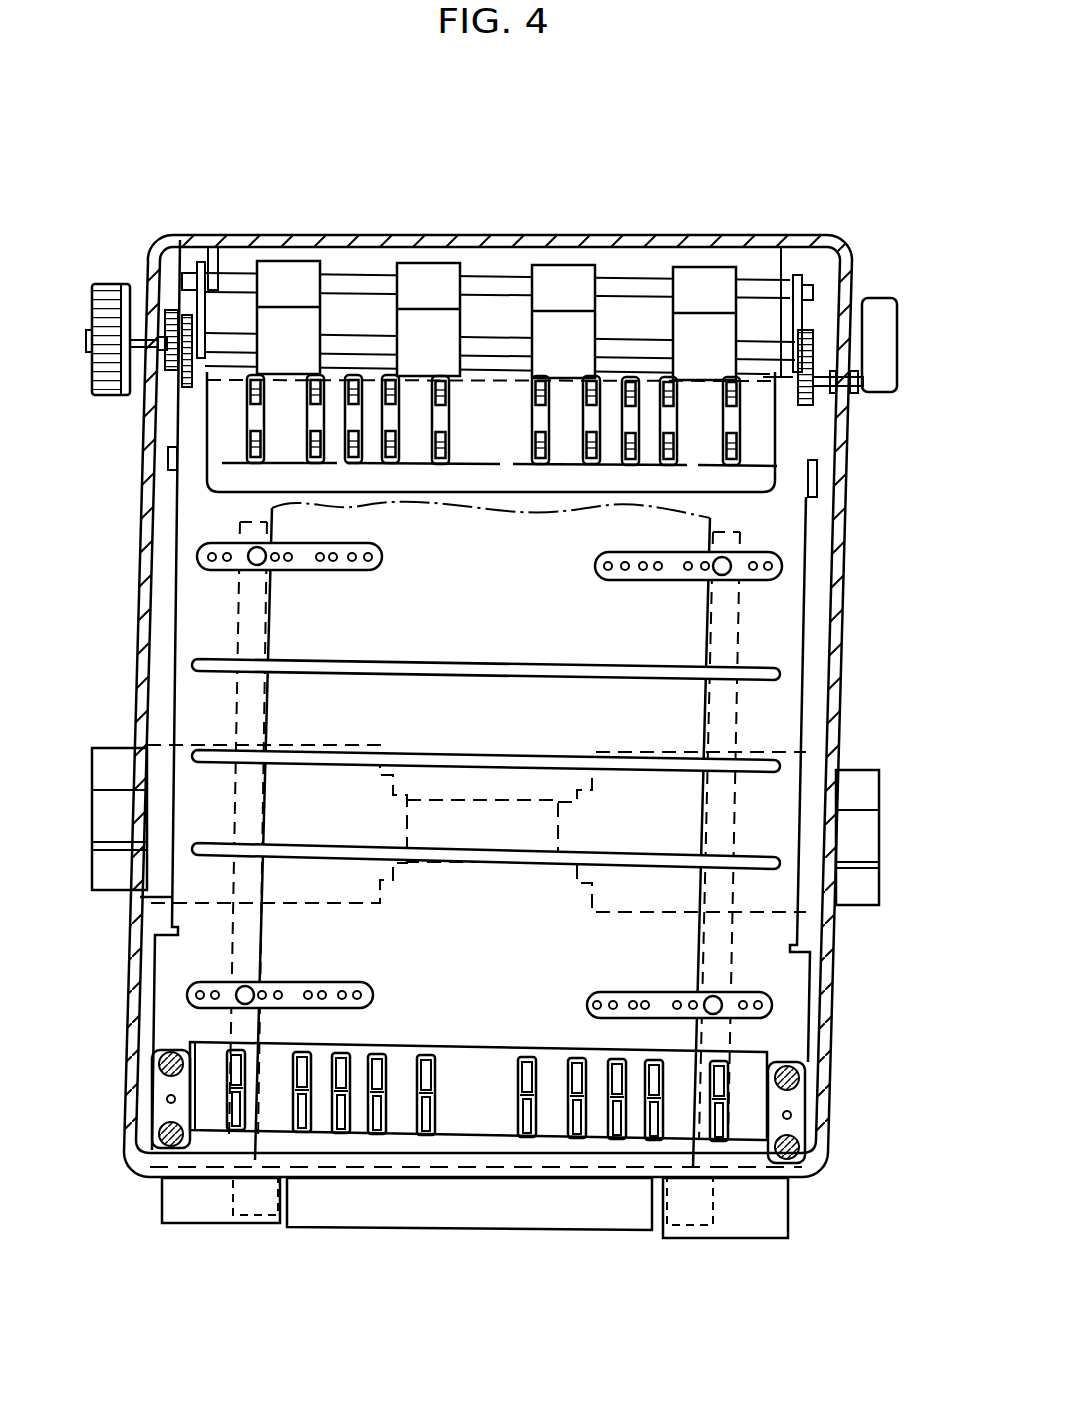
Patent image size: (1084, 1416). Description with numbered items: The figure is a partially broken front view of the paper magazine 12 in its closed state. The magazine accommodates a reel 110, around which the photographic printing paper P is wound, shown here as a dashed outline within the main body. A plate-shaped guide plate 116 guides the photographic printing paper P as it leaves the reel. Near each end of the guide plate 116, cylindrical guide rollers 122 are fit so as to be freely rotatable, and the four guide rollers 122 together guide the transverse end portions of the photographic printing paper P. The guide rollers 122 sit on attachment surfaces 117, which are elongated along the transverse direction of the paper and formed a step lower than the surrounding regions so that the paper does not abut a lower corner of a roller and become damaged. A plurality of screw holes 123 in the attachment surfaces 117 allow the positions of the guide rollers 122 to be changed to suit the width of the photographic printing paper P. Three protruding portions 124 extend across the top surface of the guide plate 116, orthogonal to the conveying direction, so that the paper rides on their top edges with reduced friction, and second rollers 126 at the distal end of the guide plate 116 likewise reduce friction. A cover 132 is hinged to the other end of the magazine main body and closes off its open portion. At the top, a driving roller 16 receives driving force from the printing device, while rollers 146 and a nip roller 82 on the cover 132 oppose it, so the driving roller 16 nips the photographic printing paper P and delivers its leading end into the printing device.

The paper magazine 12 is at (632, 213).
The driving roller 16 is at (435, 332).
The nip roller 82 is at (420, 272).
The reel 110 is at (232, 940).
The guide plate 116 is at (812, 598).
The attachment surfaces 117 is at (782, 566).
The guide roller 122 is at (738, 552).
The screw holes 123 is at (763, 1013).
The protruding portions 124 is at (770, 667).
The second rollers 126 is at (728, 1095).
The cover 132 is at (775, 241).
The rollers 146 is at (737, 410).
The photographic printing paper P is at (713, 935).